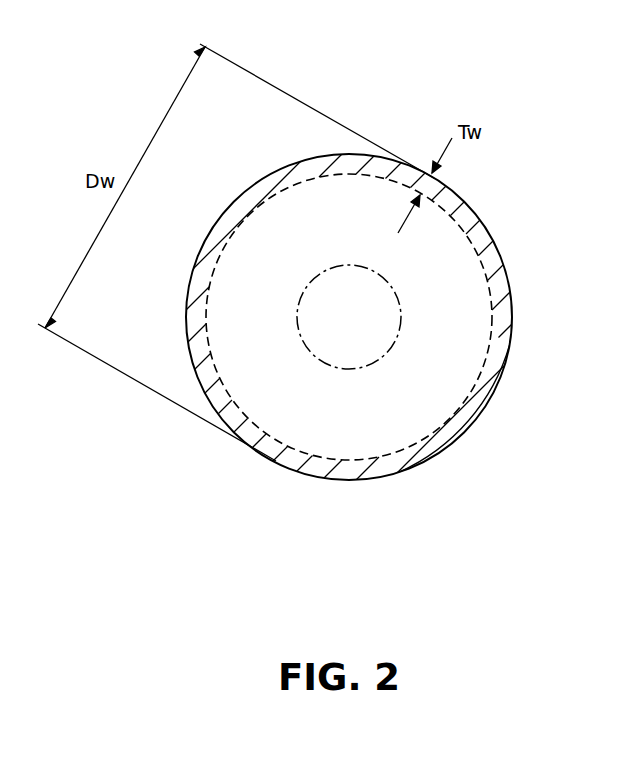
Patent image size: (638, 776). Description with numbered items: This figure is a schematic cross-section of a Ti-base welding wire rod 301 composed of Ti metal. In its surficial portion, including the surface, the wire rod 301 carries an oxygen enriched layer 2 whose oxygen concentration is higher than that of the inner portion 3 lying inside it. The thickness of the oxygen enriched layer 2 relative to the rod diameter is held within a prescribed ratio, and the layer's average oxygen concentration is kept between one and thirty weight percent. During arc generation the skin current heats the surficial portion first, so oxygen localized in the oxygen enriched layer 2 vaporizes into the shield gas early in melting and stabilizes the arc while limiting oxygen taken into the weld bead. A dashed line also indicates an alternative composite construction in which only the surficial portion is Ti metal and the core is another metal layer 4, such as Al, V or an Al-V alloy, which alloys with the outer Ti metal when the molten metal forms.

The oxygen enriched layer 2 is at (500, 283).
The inner portion 3 is at (462, 360).
The metal layer 4 is at (327, 364).
The wire rod 301 is at (421, 478).